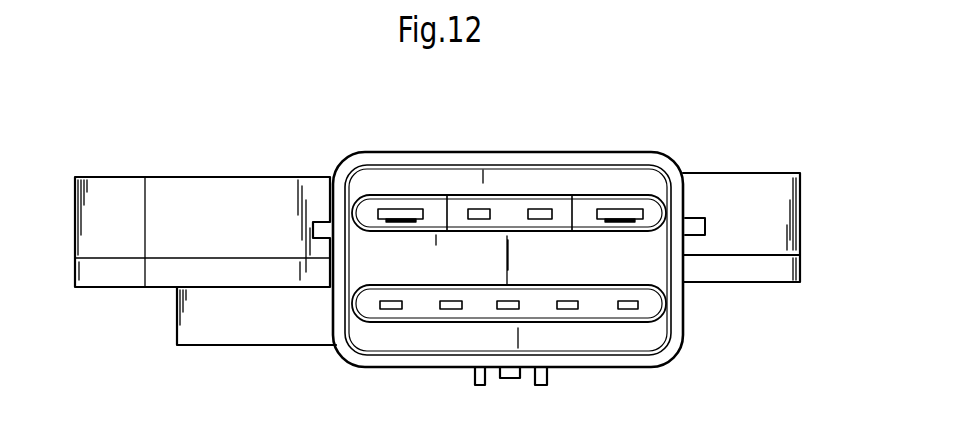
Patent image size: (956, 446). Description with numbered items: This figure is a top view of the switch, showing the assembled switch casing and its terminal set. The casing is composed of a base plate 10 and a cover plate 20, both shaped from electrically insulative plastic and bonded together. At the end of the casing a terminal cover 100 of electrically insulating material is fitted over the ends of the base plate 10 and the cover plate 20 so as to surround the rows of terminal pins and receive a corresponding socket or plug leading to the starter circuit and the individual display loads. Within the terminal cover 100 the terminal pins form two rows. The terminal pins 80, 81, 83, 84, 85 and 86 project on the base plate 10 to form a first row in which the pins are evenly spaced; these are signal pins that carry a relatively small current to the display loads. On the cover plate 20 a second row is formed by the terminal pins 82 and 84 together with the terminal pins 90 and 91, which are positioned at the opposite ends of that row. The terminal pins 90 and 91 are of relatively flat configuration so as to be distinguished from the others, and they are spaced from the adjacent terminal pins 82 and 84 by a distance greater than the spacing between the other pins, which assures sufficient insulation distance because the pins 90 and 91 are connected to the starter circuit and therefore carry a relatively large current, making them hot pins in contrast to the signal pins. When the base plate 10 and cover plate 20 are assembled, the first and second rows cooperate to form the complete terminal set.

The base plate 10 is at (745, 268).
The cover plate 20 is at (752, 185).
The terminal cover 100 is at (339, 168).
The terminal pin 80 is at (633, 310).
The terminal pin 81 is at (506, 310).
The terminal pin 82 is at (544, 209).
The terminal pin 83 is at (565, 310).
The terminal pin 84 is at (484, 209).
The terminal 85 is at (450, 310).
The terminal pin 86 is at (390, 310).
The terminal pin 90 is at (623, 209).
The terminal pin 91 is at (404, 209).